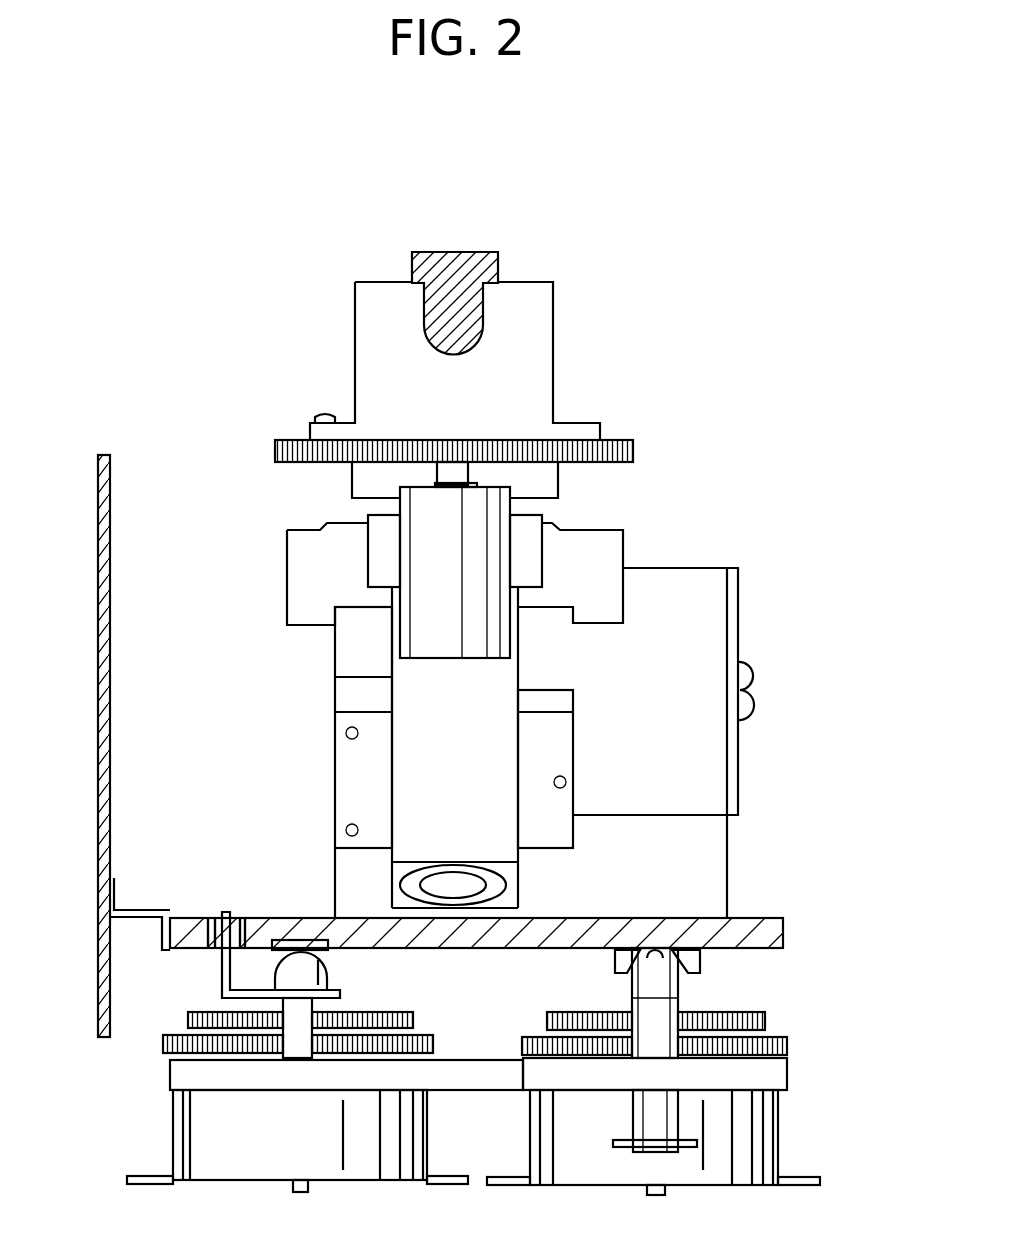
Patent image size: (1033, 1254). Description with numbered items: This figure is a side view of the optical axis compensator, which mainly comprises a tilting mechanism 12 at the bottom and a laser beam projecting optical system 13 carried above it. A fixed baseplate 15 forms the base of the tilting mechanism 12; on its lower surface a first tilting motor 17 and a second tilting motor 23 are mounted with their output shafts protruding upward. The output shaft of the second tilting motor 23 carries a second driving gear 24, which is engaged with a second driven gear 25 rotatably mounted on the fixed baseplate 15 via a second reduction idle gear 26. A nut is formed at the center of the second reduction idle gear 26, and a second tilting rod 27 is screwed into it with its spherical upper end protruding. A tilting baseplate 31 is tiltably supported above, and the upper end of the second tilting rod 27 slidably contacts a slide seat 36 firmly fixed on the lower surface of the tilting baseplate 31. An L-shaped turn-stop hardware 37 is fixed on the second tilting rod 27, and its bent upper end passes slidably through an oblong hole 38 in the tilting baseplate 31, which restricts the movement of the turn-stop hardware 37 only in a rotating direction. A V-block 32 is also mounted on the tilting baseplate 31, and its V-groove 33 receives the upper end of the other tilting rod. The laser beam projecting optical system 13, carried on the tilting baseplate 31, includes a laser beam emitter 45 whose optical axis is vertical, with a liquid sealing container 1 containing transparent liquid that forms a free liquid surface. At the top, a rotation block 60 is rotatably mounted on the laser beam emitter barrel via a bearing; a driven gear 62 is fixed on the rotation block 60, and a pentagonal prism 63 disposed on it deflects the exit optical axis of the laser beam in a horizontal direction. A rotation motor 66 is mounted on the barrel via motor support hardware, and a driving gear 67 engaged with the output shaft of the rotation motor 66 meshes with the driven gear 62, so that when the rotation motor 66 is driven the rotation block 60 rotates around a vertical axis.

The liquid sealing container 1 is at (625, 555).
The tilting mechanism 12 is at (790, 1005).
The laser beam projecting optical system 13 is at (285, 495).
The fixed baseplate 15 is at (167, 1070).
The first tilting motor 17 is at (775, 1128).
The second tilting motor 23 is at (210, 1115).
The second driving gear 24 is at (305, 1025).
The second driven gear 25 is at (433, 1045).
The second reduction idle gear 26 is at (413, 1015).
The second tilting rod 27 is at (290, 968).
The tilting baseplate 31 is at (753, 920).
The V-block 32 is at (700, 953).
The V-groove 33 is at (640, 968).
The slide seat 36 is at (253, 917).
The turn-stop hardware 37 is at (185, 917).
The oblong hole 38 is at (213, 917).
The laser beam emitter 45 is at (477, 338).
The rotation block 60 is at (555, 359).
The driven gear 62 is at (617, 439).
The pentagonal prism 63 is at (496, 253).
The rotation motor 66 is at (470, 562).
The driving gear 67 is at (430, 441).